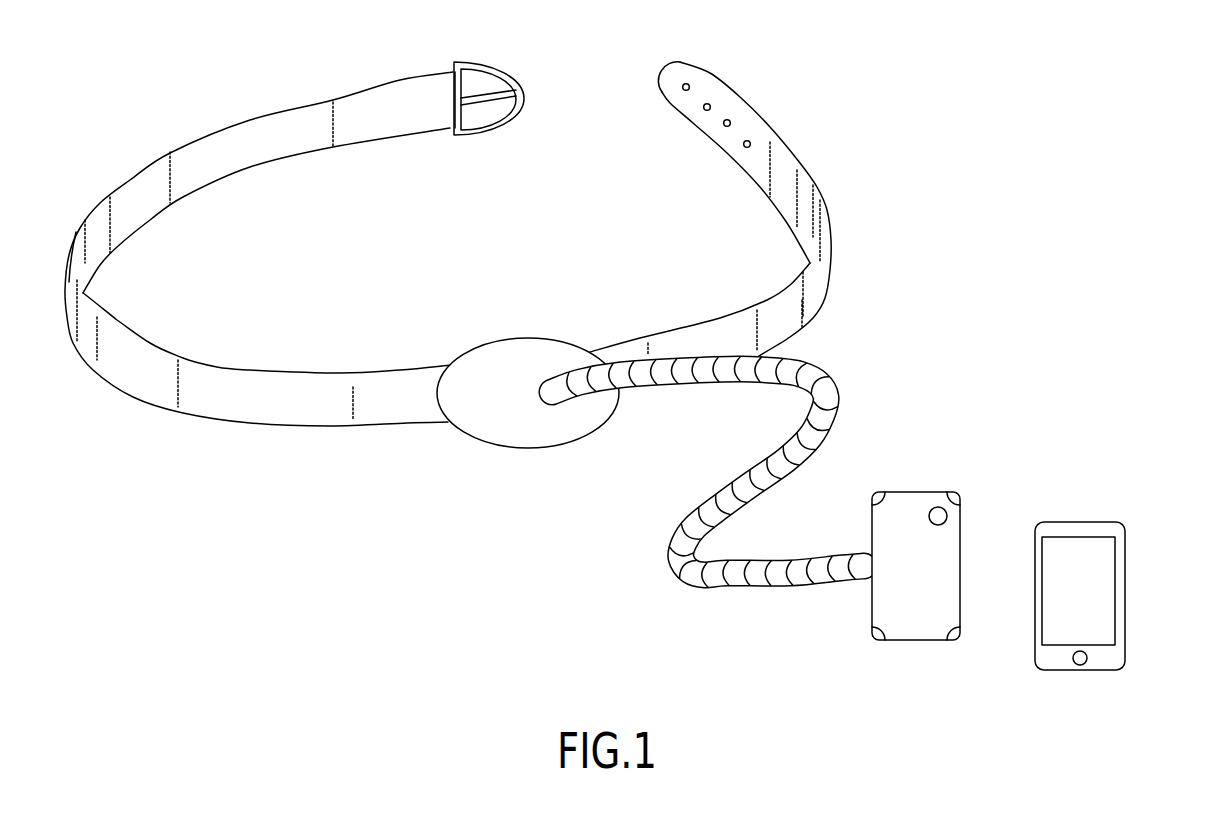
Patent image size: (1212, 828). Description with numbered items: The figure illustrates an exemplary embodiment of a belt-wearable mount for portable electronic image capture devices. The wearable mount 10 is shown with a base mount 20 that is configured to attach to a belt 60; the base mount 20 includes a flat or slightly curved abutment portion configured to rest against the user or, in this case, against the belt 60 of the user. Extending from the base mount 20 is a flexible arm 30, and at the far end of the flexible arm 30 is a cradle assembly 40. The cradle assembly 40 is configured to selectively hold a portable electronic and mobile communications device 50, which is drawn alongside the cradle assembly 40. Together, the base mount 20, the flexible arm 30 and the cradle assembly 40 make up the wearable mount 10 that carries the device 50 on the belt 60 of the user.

The wearable mount 10 is at (868, 371).
The base mount 20 is at (520, 428).
The flexible arm 30 is at (698, 566).
The cradle assembly 40 is at (927, 505).
The portable electronic and mobile communications device 50 is at (1118, 522).
The belt 60 is at (803, 183).